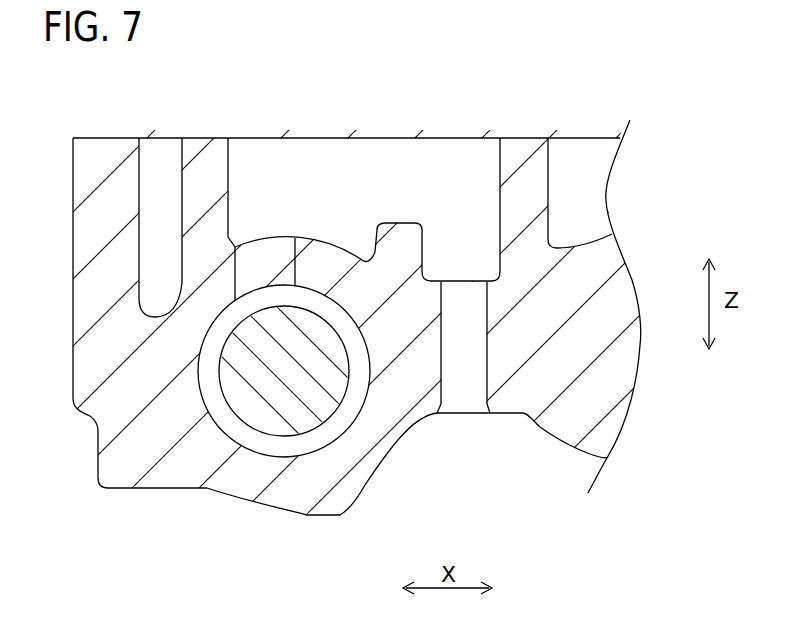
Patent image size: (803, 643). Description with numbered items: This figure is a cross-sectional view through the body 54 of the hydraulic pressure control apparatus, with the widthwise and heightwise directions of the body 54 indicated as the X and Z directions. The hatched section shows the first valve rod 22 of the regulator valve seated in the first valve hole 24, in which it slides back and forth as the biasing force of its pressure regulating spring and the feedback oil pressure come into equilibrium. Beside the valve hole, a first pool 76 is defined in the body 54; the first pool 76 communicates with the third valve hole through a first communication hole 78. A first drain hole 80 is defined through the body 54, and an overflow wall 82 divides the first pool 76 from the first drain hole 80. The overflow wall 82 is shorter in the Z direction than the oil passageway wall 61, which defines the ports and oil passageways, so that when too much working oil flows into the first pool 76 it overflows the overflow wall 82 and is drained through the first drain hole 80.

The first valve rod 22 is at (258, 406).
The first valve hole 24 is at (203, 388).
The body 54 is at (87, 308).
The oil passageway wall 61 is at (522, 148).
The first pool 76 is at (228, 157).
The first communication hole 78 is at (236, 267).
The first drain hole 80 is at (486, 380).
The overflow wall 82 is at (398, 232).